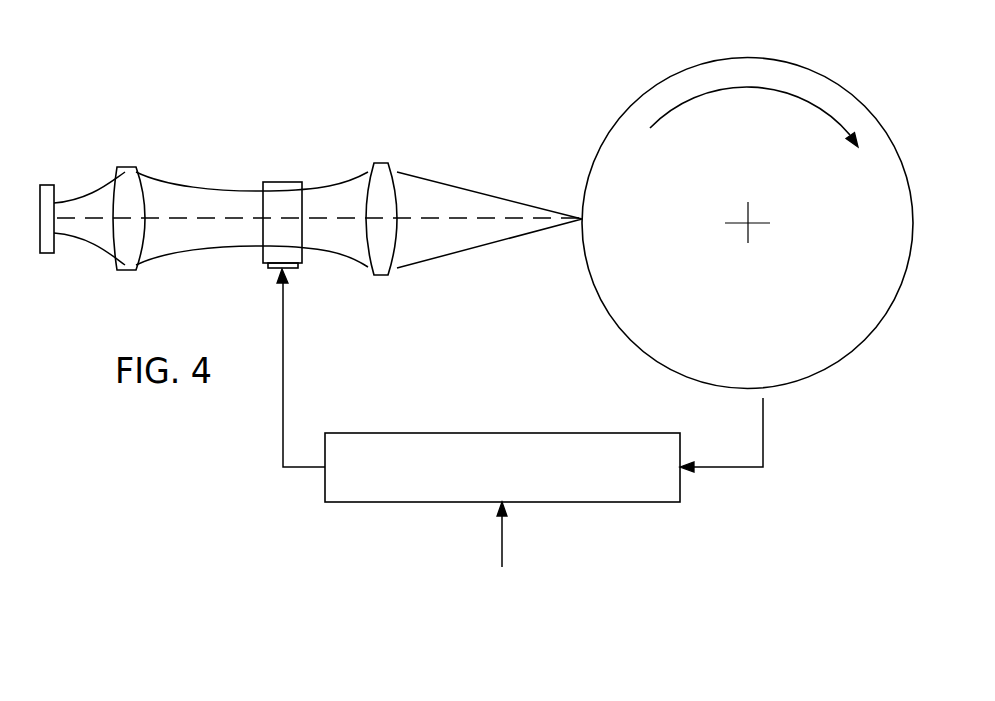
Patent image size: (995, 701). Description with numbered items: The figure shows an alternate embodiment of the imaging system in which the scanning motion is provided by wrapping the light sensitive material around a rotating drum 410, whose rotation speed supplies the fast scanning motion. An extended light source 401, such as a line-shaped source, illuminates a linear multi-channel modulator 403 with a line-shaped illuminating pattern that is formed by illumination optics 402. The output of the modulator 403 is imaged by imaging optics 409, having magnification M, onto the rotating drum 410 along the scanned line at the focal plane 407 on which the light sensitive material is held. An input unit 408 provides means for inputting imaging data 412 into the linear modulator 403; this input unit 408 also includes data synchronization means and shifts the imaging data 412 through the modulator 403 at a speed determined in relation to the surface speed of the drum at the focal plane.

The extended light source 401 is at (47, 185).
The illumination optics 402 is at (125, 167).
The linear multi-channel modulator 403 is at (282, 182).
The focal plane 407 is at (577, 226).
The input unit 408 is at (405, 433).
The imaging optics 409 is at (381, 163).
The drum 410 is at (705, 62).
The imaging data 412 is at (502, 550).